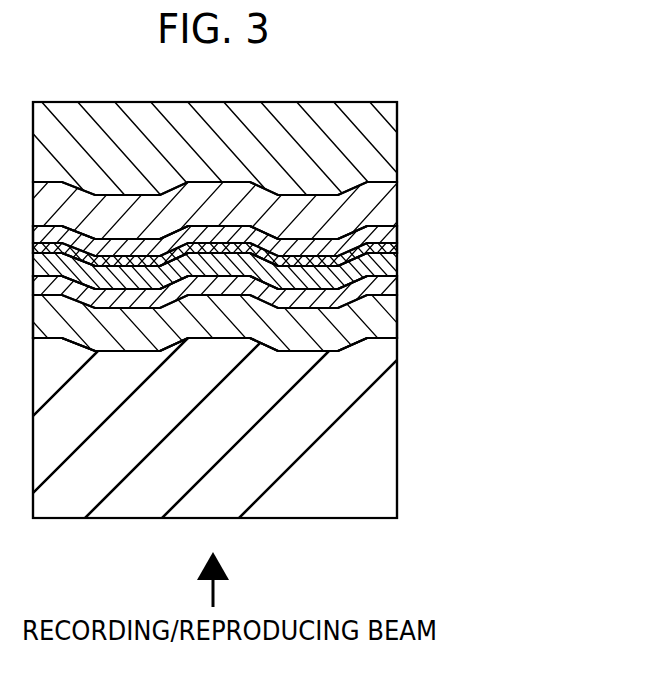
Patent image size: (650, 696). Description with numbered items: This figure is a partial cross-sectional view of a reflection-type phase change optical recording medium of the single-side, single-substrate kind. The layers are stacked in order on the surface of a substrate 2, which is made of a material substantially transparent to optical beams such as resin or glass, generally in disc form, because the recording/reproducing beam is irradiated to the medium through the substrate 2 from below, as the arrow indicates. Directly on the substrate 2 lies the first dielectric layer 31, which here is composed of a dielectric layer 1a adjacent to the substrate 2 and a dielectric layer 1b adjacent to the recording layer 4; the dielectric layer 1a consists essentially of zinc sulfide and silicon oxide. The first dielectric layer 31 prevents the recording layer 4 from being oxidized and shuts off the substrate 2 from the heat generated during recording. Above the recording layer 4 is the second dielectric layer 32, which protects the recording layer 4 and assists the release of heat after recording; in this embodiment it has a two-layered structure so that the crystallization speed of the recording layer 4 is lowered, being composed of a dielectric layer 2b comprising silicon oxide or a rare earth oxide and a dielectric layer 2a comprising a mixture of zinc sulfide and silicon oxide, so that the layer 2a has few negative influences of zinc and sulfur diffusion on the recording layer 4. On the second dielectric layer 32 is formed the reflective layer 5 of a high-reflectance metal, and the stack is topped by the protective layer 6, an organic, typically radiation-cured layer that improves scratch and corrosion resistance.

The protective layer 6 is at (397, 147).
The reflective layer 5 is at (397, 202).
The dielectric layer 2b is at (397, 230).
The dielectric layer 2a is at (397, 248).
The second dielectric layer 32 is at (537, 190).
The recording layer 4 is at (397, 262).
The dielectric layer 1b is at (397, 283).
The dielectric layer 1a is at (397, 313).
The first dielectric layer 31 is at (539, 345).
The substrate 2 is at (397, 422).